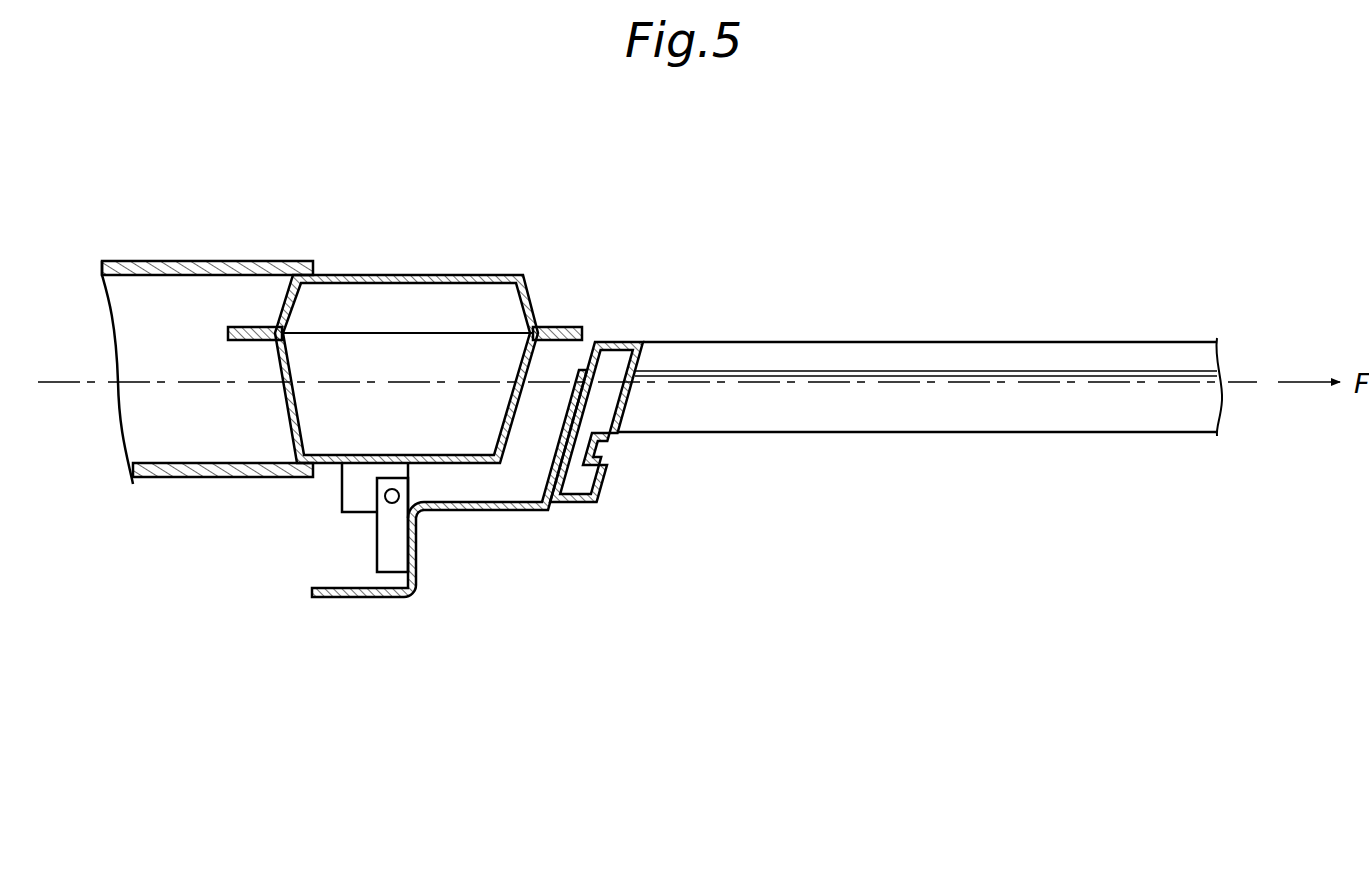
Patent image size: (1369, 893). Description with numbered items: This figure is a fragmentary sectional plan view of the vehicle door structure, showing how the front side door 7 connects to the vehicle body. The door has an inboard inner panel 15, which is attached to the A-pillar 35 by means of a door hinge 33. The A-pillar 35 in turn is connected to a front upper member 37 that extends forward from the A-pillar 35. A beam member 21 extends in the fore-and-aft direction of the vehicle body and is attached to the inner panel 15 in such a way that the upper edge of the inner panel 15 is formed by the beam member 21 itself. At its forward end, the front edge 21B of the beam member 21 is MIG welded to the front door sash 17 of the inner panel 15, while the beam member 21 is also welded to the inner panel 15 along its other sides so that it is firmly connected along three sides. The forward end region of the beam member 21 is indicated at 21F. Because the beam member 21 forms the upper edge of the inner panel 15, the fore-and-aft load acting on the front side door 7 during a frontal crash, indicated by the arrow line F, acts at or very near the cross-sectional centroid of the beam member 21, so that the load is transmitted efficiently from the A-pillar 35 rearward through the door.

The front side door 7 is at (1073, 287).
The inner panel 15 is at (475, 507).
The front door sash 17 is at (602, 478).
The beam member 21 is at (910, 344).
The front edge 21B is at (652, 355).
The front end portion of shaft 21F is at (1175, 375).
The door hinge 33 is at (380, 497).
The A-pillar 35 is at (400, 278).
The front upper member 37 is at (183, 268).